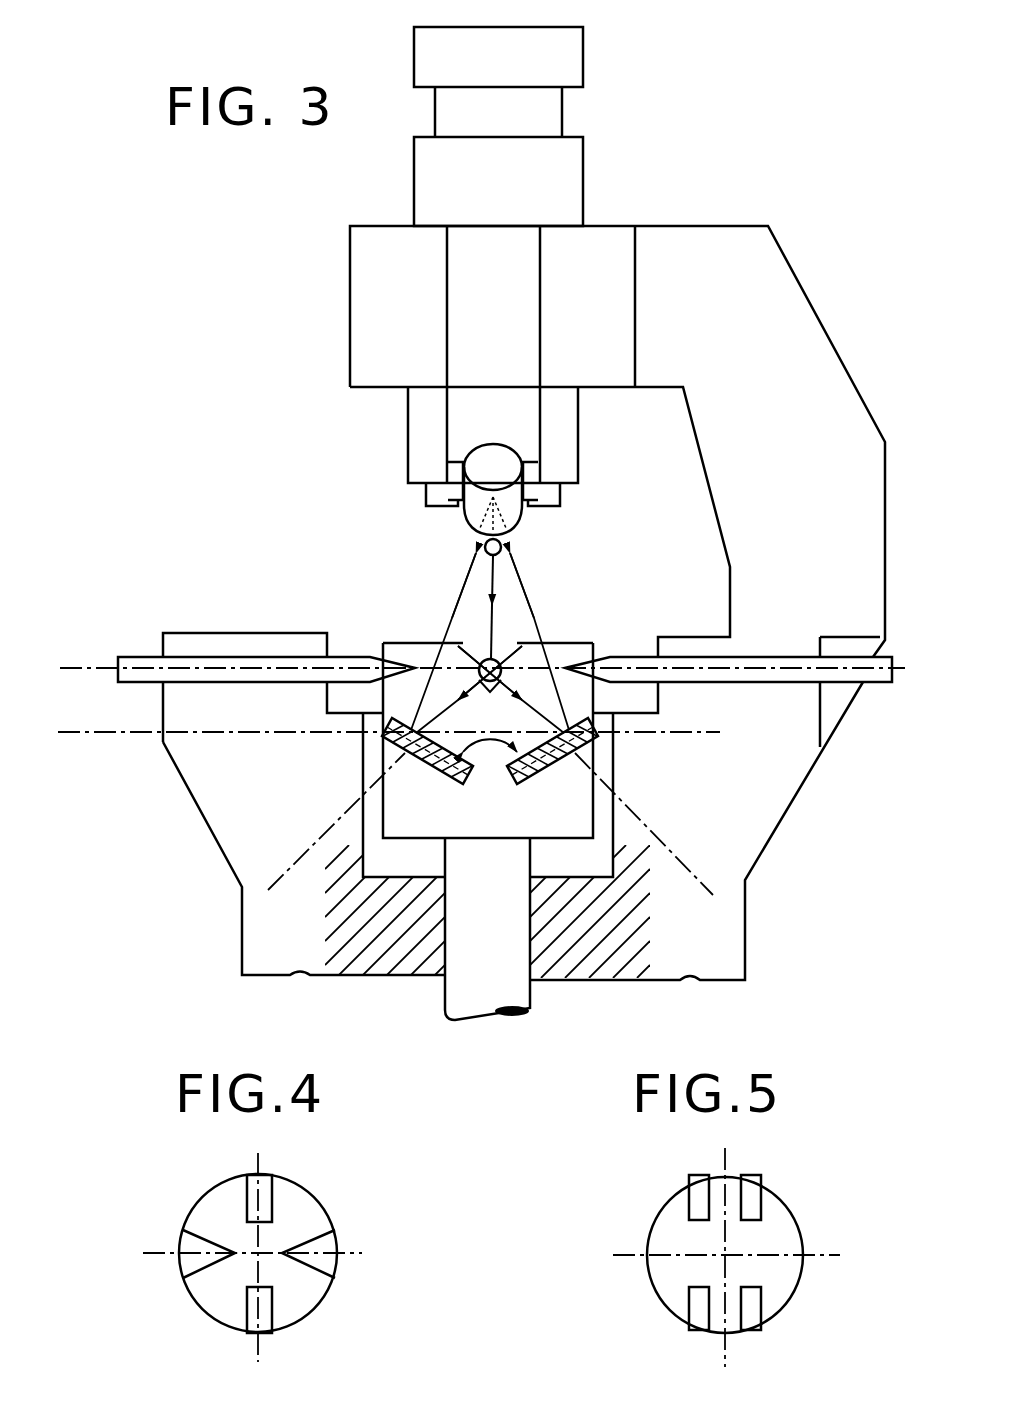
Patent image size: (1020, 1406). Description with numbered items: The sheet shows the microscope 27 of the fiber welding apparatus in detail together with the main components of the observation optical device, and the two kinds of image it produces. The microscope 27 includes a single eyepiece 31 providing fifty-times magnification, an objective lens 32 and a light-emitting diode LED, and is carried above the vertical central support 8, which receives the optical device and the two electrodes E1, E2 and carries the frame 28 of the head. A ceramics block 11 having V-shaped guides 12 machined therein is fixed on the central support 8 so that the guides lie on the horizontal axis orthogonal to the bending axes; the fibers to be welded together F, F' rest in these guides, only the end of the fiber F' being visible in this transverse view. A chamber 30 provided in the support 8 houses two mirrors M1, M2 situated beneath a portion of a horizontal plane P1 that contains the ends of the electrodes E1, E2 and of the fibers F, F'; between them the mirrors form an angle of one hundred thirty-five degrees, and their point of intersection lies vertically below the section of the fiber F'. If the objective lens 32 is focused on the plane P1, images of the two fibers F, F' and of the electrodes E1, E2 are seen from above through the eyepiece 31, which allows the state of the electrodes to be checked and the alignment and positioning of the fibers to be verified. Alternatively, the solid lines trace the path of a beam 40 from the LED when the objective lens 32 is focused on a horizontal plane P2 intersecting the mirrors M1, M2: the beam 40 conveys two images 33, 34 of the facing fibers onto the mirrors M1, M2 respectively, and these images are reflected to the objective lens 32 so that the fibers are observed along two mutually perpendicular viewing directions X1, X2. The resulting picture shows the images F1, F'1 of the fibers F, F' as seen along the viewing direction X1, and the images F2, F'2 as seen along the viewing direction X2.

In FIG. 3, the eyepiece 31 is at (558, 168).
In FIG. 3, the machine frame 28 is at (707, 252).
In FIG. 3, the microscope 27 is at (400, 500).
In FIG. 3, the objective lens 32 is at (436, 498).
In FIG. 3, the light-emitting diode LED is at (503, 547).
In FIG. 3, the beam 40 is at (494, 582).
In FIG. 3, the ceramics block 11 is at (562, 643).
In FIG. 3, the fiber F' is at (500, 642).
In FIG. 4, the fiber F' is at (298, 1180).
In FIG. 3, the V-shaped guide 12 is at (466, 652).
In FIG. 3, the horizontal plane P1 is at (90, 668).
In FIG. 3, the horizontal plane P2 is at (100, 700).
In FIG. 3, the electrode E1 is at (255, 662).
In FIG. 4, the electrode E1 is at (190, 1245).
In FIG. 3, the electrode E2 is at (690, 660).
In FIG. 4, the electrode E2 is at (328, 1243).
In FIG. 3, the image 33 is at (430, 720).
In FIG. 3, the image 34 is at (550, 720).
In FIG. 3, the mirror M1 is at (442, 773).
In FIG. 3, the mirror M2 is at (540, 770).
In FIG. 3, the central support 8 is at (230, 790).
In FIG. 3, the viewing direction X1 is at (295, 870).
In FIG. 3, the viewing direction X2 is at (688, 870).
In FIG. 3, the chamber 30 is at (612, 838).
In FIG. 4, the fiber F is at (302, 1310).
In FIG. 5, the image F'1 is at (653, 1180).
In FIG. 5, the image F'2 is at (795, 1180).
In FIG. 5, the image F1 is at (697, 1305).
In FIG. 5, the image F2 is at (753, 1305).